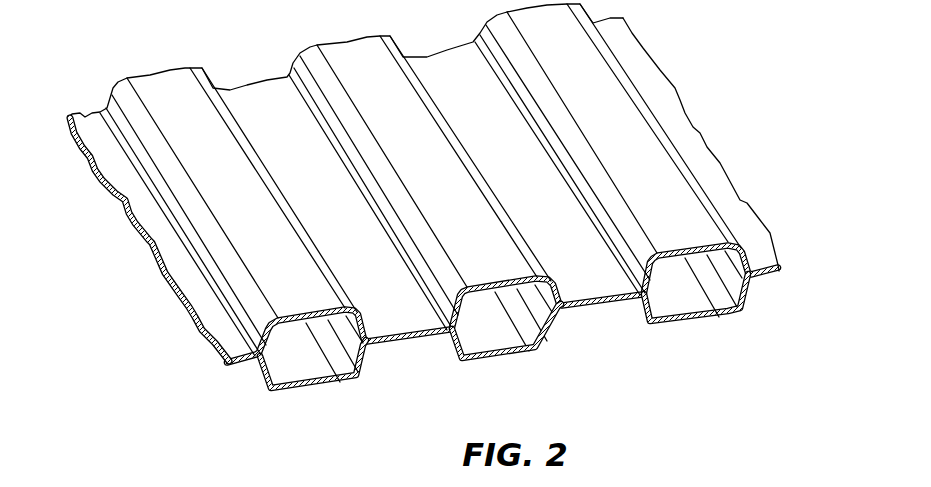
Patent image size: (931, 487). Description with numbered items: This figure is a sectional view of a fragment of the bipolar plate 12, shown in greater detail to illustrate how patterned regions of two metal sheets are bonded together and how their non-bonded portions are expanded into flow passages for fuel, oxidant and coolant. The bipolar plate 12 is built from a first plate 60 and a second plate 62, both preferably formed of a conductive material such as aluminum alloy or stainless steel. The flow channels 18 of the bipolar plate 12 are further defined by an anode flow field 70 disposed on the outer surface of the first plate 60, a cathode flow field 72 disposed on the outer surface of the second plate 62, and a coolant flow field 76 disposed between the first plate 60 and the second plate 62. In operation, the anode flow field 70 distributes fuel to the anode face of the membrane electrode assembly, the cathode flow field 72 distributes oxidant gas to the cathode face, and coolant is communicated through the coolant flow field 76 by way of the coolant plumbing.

The bipolar plate 12 is at (447, 214).
The flow channels 18 is at (619, 111).
The first plate 60 is at (747, 230).
The second plate 62 is at (245, 370).
The anode flow field 70 is at (366, 283).
The cathode flow field 72 is at (552, 333).
The coolant flow field 76 is at (733, 317).